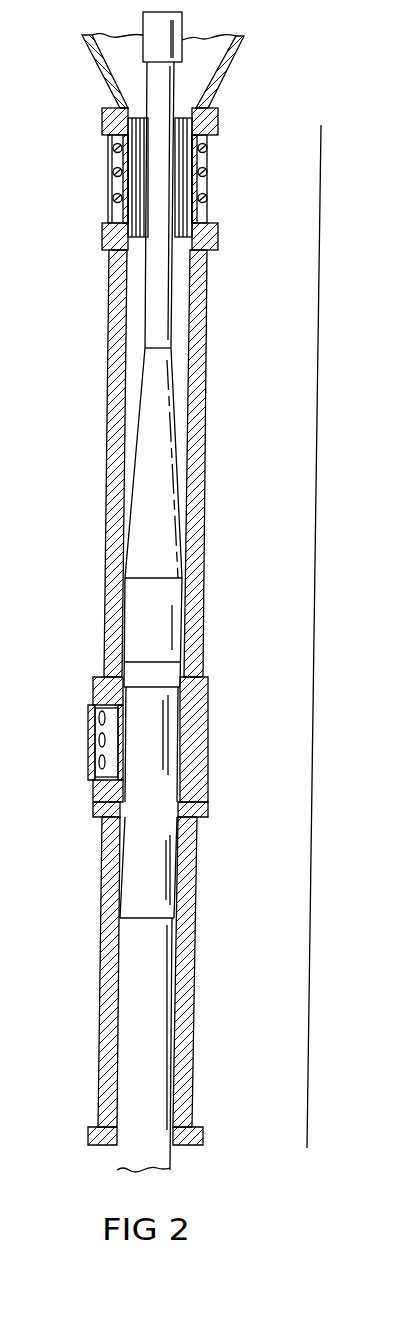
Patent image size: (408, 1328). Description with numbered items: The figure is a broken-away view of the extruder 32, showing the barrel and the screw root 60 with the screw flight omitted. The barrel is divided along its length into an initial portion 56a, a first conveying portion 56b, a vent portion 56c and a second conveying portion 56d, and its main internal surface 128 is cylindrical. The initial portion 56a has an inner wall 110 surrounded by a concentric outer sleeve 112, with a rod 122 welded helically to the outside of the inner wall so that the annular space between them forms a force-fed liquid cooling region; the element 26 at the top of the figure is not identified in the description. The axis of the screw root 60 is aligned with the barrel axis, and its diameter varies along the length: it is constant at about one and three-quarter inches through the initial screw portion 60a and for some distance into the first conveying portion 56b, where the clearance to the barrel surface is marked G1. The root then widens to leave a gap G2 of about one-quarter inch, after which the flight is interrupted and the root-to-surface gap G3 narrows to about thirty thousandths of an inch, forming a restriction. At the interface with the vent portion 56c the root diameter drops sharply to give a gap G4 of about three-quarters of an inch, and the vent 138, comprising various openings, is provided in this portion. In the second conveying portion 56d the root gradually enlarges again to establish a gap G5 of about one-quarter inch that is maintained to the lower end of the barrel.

The blowout preventer / wellhead body 26 is at (218, 50).
The extruder 32 is at (197, 590).
The screw root 60 is at (167, 77).
The initial screw portion 60a is at (150, 170).
The inner wall 110 is at (206, 149).
The concentric outer sleeve 112 is at (207, 173).
The rod 122 is at (207, 199).
The main internal surface of the barrel 128 is at (188, 270).
The vent 138 is at (100, 731).
The initial portion of the barrel 56a is at (308, 125).
The first conveying portion 56b is at (317, 465).
The vent portion 56c is at (298, 692).
The second conveying portion 56d is at (292, 1148).
The first gap G1 is at (138, 310).
The gap G2 is at (148, 598).
The root-surface gap G3 is at (148, 670).
The gap G4 is at (142, 784).
The gap G5 is at (145, 973).